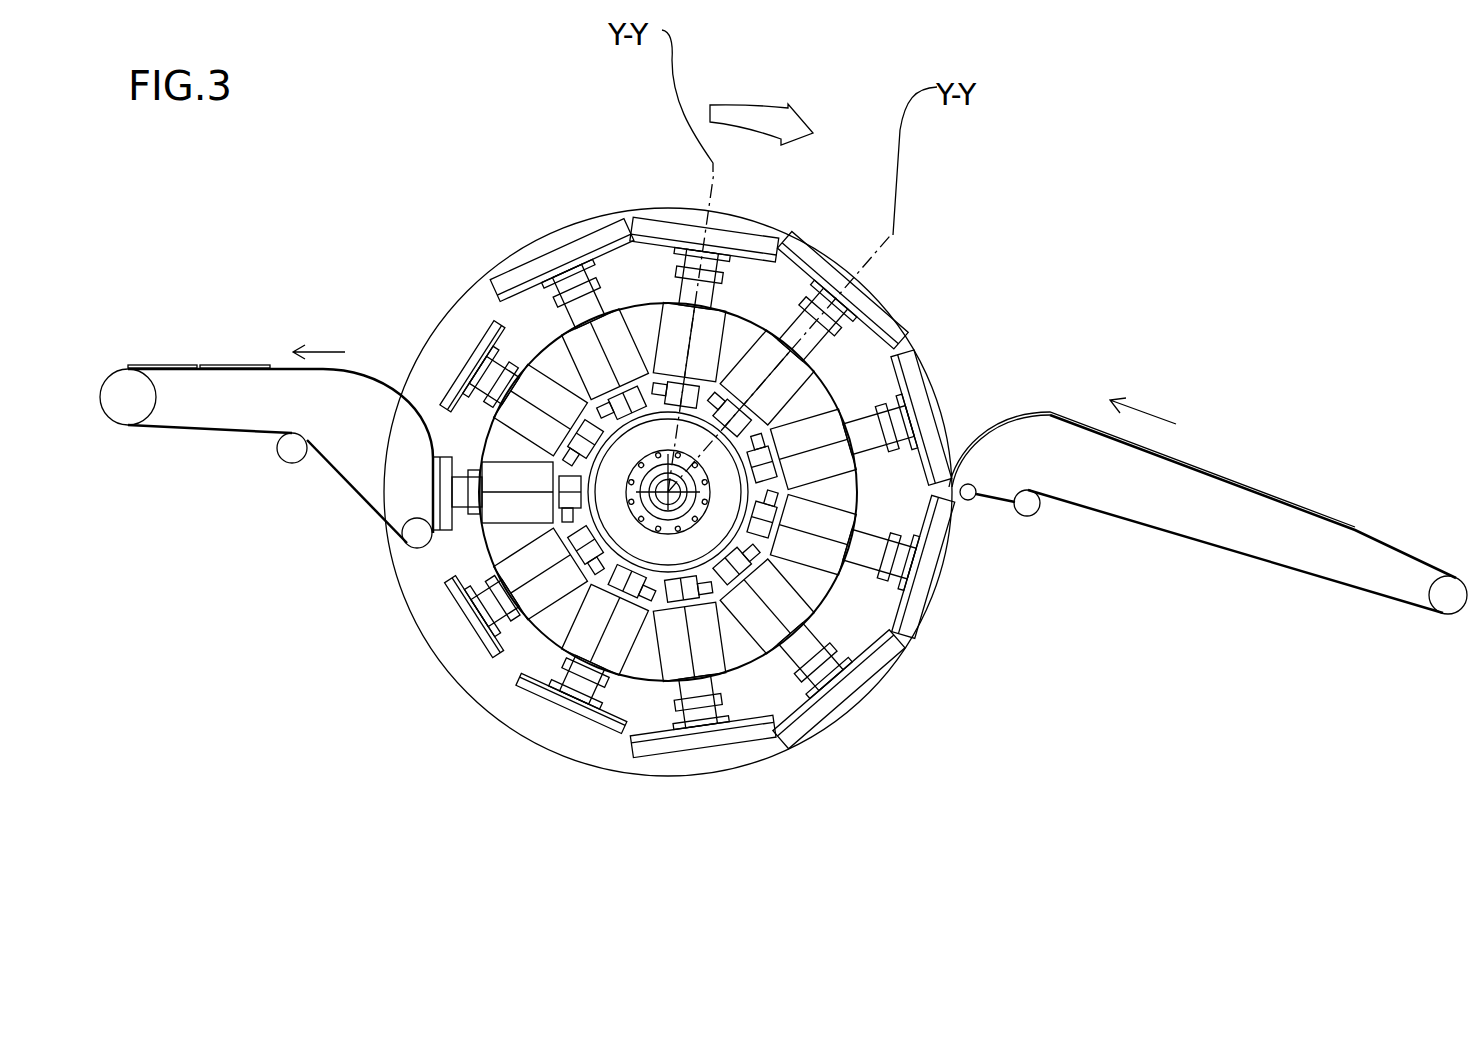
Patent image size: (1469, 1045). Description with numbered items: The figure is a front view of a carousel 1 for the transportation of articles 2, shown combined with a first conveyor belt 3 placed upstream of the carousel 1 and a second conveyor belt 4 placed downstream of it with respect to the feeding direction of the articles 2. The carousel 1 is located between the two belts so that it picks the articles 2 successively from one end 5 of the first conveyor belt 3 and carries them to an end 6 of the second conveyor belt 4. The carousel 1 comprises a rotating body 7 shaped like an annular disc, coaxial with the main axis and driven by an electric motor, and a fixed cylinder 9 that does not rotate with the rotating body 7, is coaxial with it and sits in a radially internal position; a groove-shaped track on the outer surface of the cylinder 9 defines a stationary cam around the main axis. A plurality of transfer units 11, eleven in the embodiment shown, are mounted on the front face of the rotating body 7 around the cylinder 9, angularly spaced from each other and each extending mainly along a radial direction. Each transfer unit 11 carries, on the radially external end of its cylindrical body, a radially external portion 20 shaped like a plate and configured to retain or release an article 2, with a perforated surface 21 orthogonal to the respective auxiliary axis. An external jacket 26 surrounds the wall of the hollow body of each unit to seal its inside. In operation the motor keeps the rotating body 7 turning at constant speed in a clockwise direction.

The carousel 1 is at (1062, 276).
The articles 2 is at (150, 366).
The first conveyor belt 3 is at (1200, 415).
The second conveyor belt 4 is at (240, 342).
The end of the first conveyor belt 5 is at (965, 440).
The end of the second conveyor belt 6 is at (428, 486).
The rotating body 7 is at (668, 774).
The fixed cylinder 9 is at (663, 600).
The transfer units 11 is at (691, 486).
The radially external portion 20 is at (748, 231).
The perforated surface 21 is at (775, 382).
The external jacket 26 is at (651, 442).